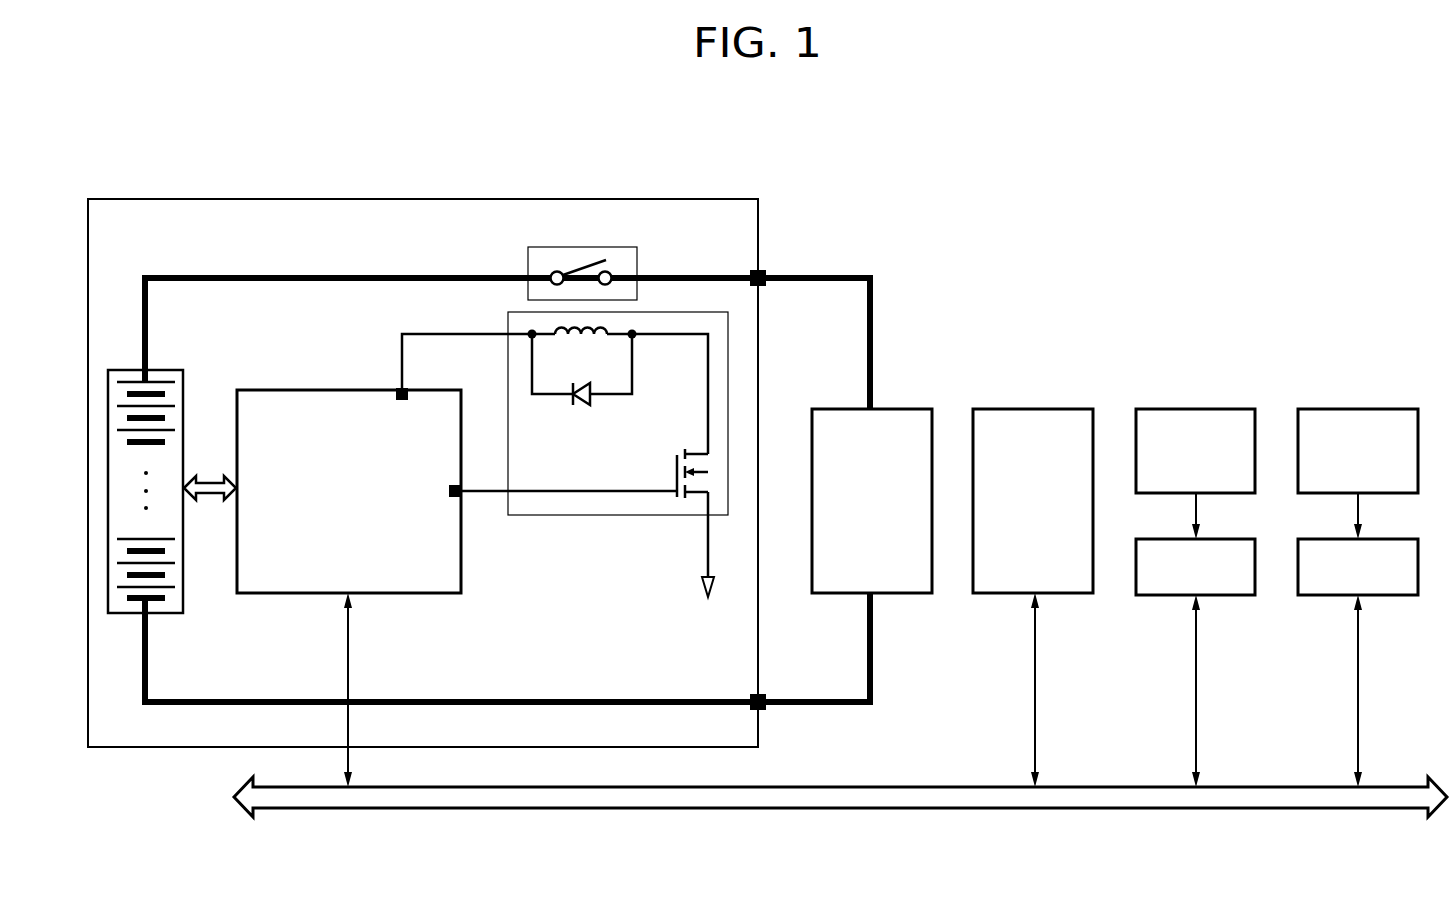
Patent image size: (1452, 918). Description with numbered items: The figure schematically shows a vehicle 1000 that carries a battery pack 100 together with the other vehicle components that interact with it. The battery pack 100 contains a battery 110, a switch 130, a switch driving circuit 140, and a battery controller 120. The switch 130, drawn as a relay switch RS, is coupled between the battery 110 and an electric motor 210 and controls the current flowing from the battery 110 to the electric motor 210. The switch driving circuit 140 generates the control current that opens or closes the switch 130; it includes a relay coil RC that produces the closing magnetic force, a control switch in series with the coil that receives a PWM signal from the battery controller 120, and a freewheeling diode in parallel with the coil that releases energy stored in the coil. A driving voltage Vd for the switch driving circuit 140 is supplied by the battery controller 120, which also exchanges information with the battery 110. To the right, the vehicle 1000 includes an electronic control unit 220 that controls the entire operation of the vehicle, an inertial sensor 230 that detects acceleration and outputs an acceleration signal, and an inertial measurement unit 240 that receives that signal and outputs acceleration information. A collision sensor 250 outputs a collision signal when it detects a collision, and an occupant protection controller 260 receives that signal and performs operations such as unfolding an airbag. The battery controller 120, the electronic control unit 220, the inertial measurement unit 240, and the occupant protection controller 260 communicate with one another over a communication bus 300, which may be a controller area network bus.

The vehicle 1000 is at (1338, 217).
The battery pack 100 is at (687, 199).
The battery 110 is at (160, 370).
The battery controller 120 is at (423, 388).
The switch 130 is at (612, 247).
The switch driving circuit 140 is at (618, 515).
The electric motor 210 is at (882, 409).
The electronic control unit 220 is at (1043, 409).
The inertial sensor 230 is at (1210, 409).
The inertial measurement unit 240 is at (1210, 539).
The collision sensor 250 is at (1373, 409).
The occupant protection controller 260 is at (1373, 539).
The communication bus 300 is at (880, 787).